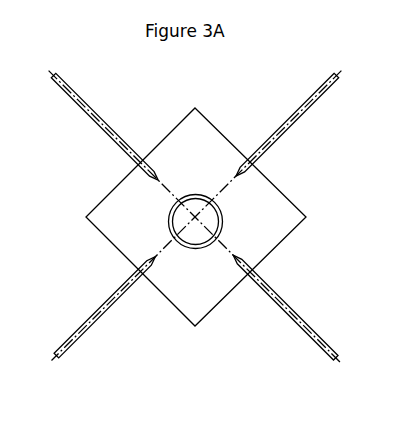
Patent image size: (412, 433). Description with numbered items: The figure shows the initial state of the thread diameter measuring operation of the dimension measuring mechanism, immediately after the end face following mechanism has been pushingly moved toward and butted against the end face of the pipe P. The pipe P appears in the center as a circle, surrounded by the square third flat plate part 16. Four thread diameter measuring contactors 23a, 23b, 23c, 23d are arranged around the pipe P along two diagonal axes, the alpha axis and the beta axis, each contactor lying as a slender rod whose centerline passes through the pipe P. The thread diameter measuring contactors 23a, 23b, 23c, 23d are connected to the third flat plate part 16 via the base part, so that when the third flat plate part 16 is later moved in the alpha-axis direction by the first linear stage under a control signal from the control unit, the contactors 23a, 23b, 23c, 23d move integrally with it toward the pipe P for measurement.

The third flat plate part 16 is at (272, 204).
The pipe P is at (200, 194).
The thread diameter measuring contactor 23a is at (318, 93).
The thread diameter measuring contactor 23b is at (318, 339).
The thread diameter measuring contactor 23c is at (75, 339).
The thread diameter measuring contactor 23d is at (75, 91).